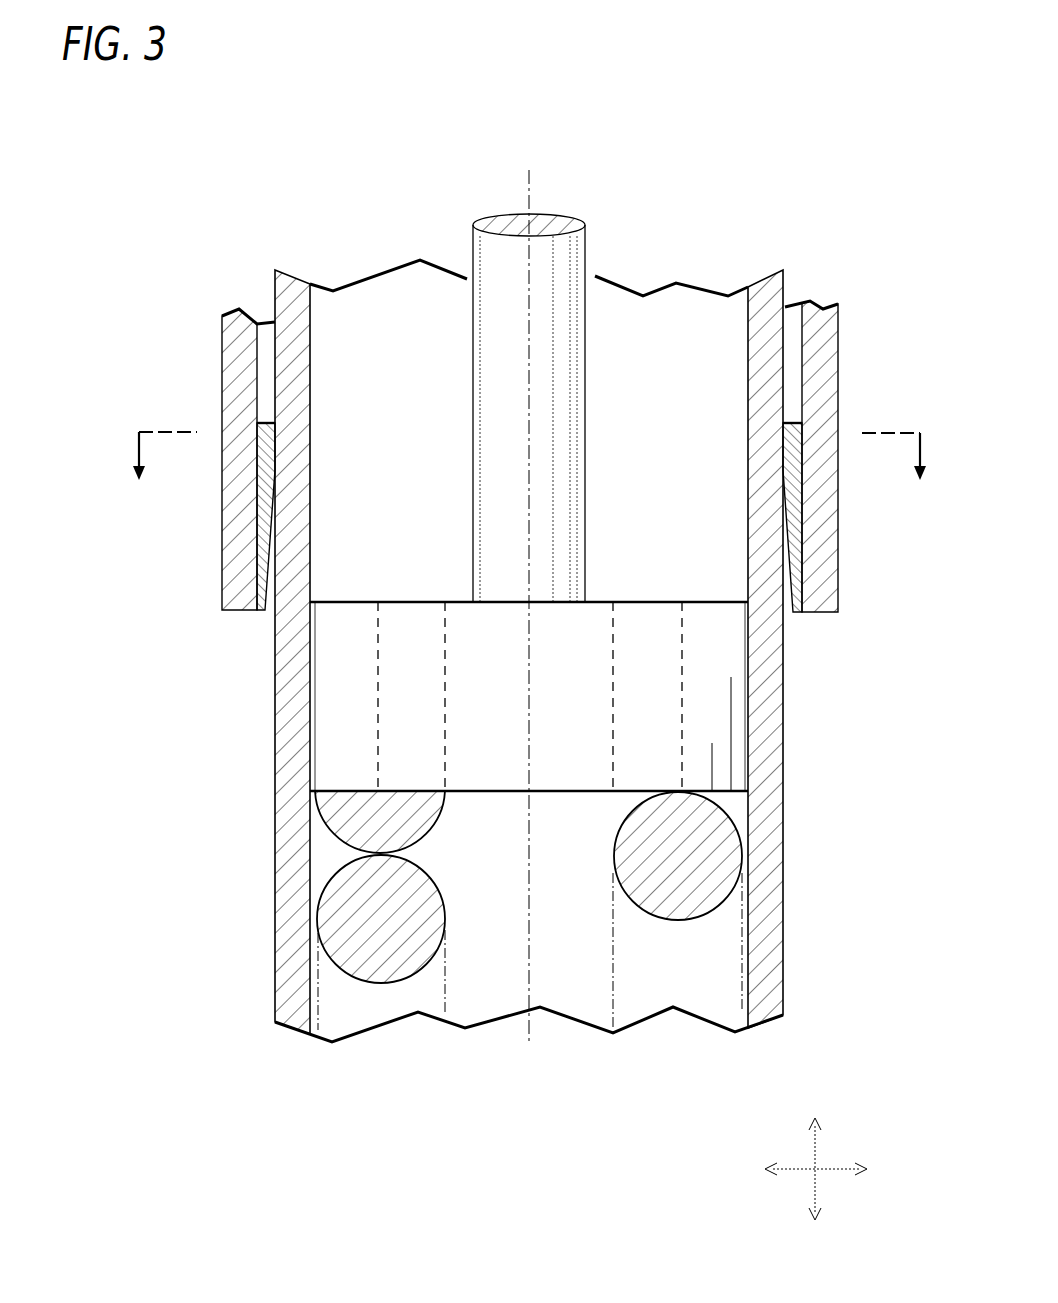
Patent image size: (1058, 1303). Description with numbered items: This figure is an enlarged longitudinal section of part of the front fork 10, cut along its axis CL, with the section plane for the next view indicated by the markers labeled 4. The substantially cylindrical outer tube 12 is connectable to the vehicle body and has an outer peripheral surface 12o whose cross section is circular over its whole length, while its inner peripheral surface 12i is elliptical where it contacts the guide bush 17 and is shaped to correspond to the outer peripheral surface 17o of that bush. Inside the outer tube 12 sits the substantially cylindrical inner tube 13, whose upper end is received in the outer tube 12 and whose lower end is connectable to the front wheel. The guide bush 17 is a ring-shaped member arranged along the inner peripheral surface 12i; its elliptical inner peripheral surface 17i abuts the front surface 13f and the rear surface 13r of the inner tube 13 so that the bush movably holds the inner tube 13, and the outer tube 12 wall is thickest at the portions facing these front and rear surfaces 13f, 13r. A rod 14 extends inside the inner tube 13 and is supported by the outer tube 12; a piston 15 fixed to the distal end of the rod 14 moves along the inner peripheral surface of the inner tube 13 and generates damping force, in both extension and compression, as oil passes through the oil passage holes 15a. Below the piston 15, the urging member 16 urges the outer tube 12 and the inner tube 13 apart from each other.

The front fork 10 is at (188, 158).
The outer tube 12 is at (545, 476).
The outer peripheral surface 12o is at (222, 572).
The inner peripheral surface 12i is at (262, 593).
The inner tube 13 is at (525, 631).
The front surface 13f is at (272, 297).
The rear surface 13r is at (785, 288).
The rod 14 is at (587, 250).
The piston 15 is at (363, 602).
The oil passage holes 15a is at (378, 696).
The urging member 16 is at (318, 980).
The guide bush 17 is at (858, 480).
The outer peripheral surface 17o is at (803, 527).
The inner peripheral surface 17i is at (792, 596).
The axis CL is at (532, 187).
The section line IV-IV 4 is at (528, 482).